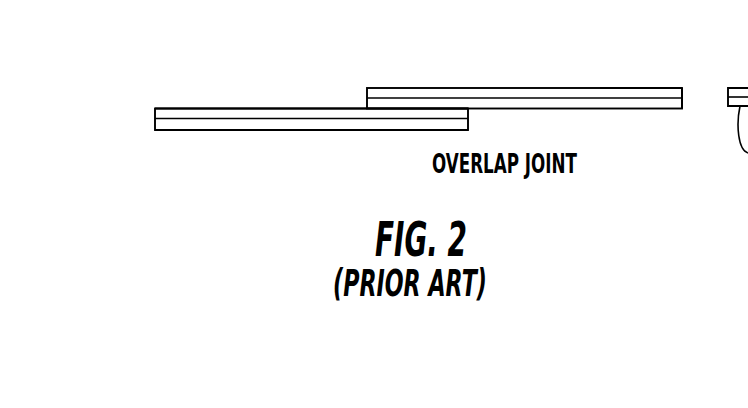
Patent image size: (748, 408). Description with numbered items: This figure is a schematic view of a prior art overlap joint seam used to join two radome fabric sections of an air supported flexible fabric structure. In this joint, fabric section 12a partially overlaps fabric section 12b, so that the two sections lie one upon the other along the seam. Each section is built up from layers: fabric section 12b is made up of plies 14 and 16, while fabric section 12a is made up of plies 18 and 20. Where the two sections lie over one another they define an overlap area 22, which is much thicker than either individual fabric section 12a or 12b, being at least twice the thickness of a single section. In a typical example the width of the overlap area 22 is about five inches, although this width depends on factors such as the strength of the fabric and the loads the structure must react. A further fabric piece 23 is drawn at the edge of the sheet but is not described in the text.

The fabric section 12a is at (474, 88).
The fabric section 12b is at (213, 108).
The ply 14 is at (155, 113).
The ply 16 is at (155, 128).
The ply 18 is at (667, 90).
The ply 20 is at (682, 101).
The overlap area 22 is at (452, 78).
The adjacent plate 23 is at (728, 92).